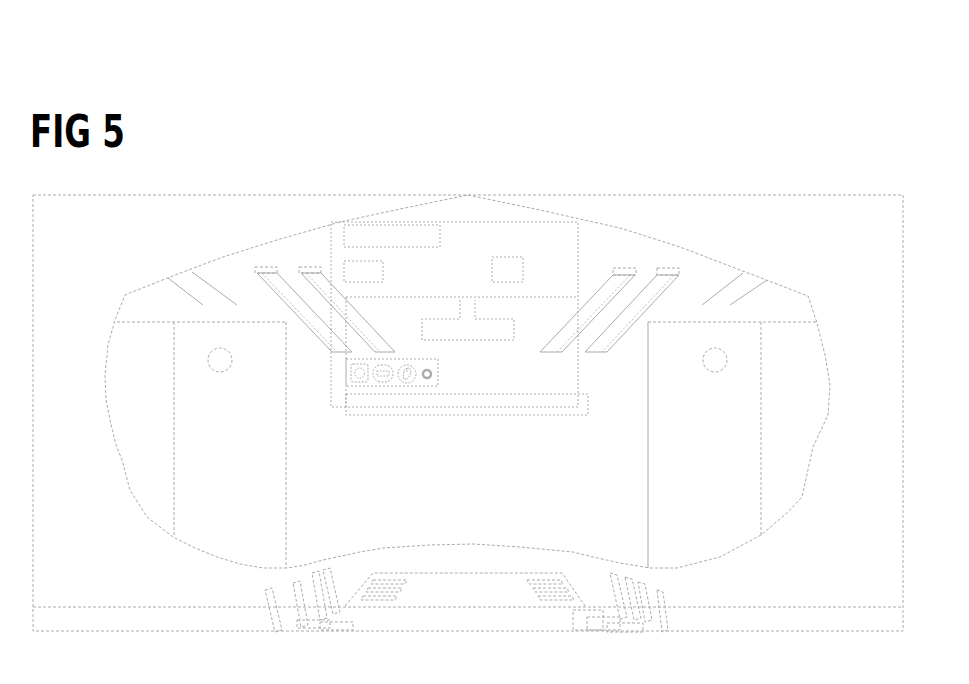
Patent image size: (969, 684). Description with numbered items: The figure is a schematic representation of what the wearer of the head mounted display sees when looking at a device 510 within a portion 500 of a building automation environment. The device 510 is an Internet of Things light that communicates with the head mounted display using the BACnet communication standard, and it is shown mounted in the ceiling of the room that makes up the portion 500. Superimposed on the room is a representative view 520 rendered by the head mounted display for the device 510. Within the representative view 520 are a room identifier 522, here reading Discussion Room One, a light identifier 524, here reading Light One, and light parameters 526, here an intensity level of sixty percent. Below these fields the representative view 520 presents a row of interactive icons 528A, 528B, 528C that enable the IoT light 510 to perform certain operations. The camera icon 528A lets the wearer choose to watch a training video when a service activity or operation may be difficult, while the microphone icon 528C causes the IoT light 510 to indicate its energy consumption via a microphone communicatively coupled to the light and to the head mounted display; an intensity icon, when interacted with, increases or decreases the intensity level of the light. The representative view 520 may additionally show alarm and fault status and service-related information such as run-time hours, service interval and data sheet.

The portion of the building automation environment 500 is at (265, 423).
The device 510 is at (590, 355).
The representative view 520 is at (475, 222).
The room identifier 522 is at (361, 222).
The light identifier 524 is at (343, 270).
The light parameters 526 is at (510, 257).
The camera icon 528A is at (358, 385).
The interactive icon 528B is at (383, 385).
The microphone icon 528C is at (407, 385).